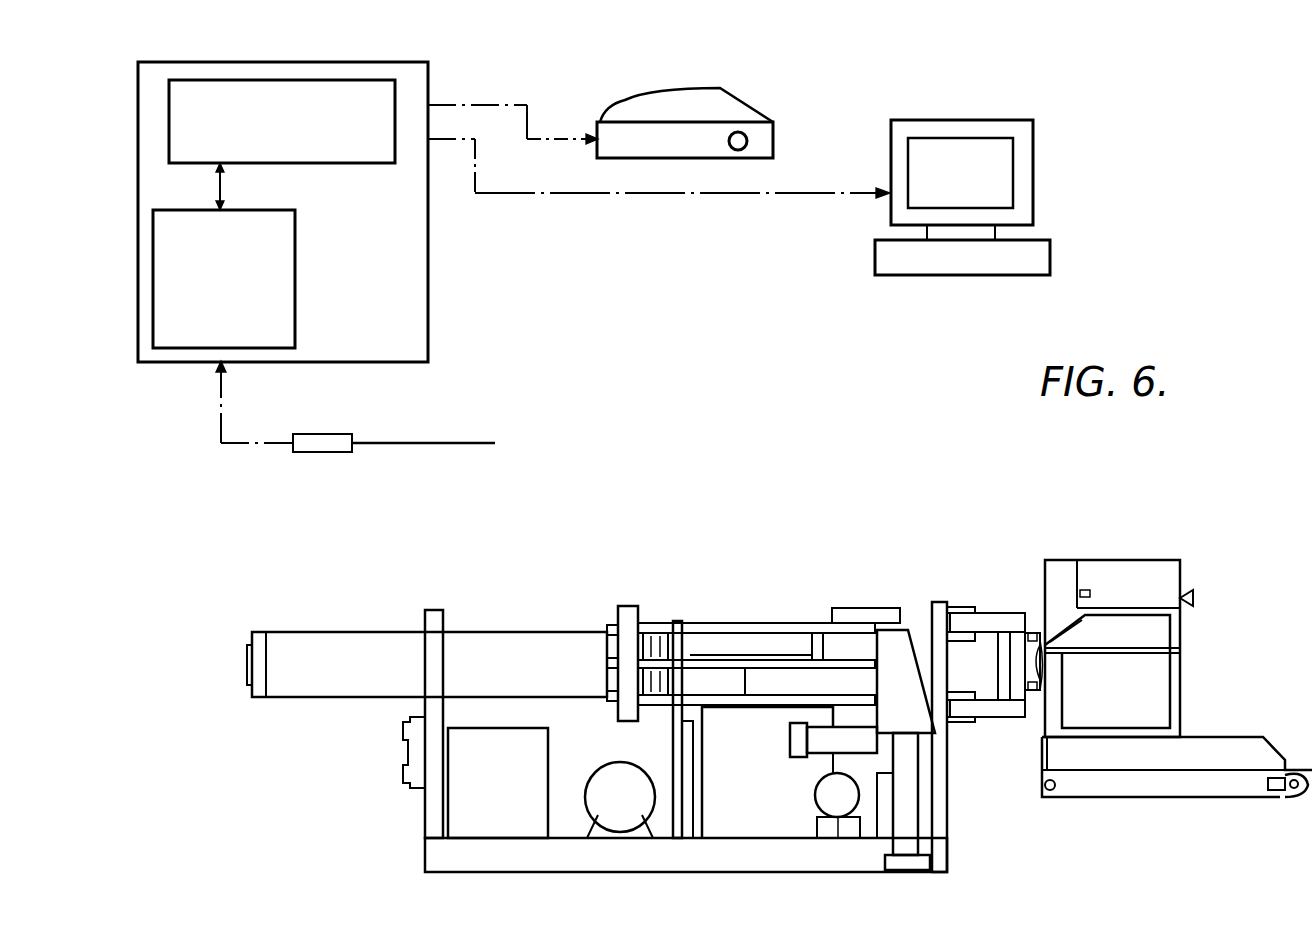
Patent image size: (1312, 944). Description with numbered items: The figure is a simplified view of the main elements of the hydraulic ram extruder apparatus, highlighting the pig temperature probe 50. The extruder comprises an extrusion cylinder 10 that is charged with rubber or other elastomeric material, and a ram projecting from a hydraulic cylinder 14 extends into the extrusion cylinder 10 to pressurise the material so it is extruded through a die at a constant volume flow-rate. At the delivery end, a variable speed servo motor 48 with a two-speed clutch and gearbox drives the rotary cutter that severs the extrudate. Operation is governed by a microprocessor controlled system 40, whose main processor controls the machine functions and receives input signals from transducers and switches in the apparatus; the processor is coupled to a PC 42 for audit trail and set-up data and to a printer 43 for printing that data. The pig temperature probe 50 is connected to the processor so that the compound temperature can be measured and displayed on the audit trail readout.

The extrusion cylinder 10 is at (980, 668).
The hydraulic cylinder 14 is at (330, 637).
The microprocessor controlled system 40 is at (255, 58).
The PC 42 is at (1052, 168).
The printer 43 is at (775, 130).
The variable speed servo motor 48 is at (1110, 568).
The pig temperature probe 50 is at (390, 444).